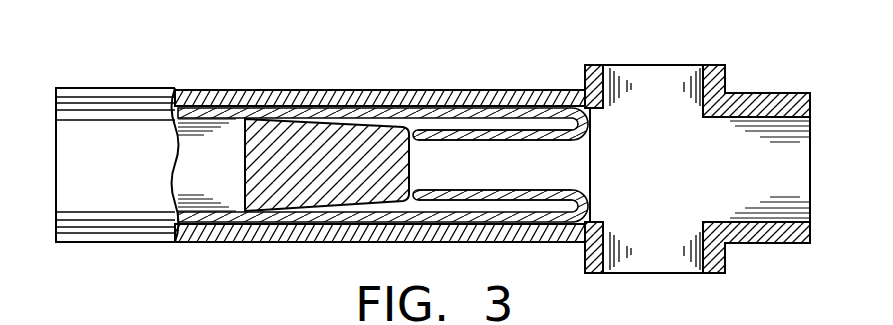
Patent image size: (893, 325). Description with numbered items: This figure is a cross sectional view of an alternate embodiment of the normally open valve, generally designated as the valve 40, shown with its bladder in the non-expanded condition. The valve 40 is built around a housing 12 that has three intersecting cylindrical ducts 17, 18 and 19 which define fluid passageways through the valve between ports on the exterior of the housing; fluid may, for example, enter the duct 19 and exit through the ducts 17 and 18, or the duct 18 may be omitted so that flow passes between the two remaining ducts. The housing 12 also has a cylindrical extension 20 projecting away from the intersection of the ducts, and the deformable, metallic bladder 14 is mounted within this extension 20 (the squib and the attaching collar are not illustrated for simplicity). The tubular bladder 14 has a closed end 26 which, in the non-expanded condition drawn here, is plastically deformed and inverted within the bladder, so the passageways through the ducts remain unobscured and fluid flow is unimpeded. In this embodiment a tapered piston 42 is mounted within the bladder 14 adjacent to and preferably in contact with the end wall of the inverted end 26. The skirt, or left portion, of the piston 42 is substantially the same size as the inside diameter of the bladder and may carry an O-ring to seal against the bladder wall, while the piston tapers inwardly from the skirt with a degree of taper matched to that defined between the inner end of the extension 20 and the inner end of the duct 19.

The housing 12 is at (483, 90).
The deformable metallic bladder 14 is at (217, 112).
The cylindrical duct 17 is at (727, 76).
The cylindrical duct 18 is at (727, 257).
The cylindrical duct 19 is at (764, 94).
The cylindrical extension 20 is at (386, 90).
The closed end 26 is at (435, 193).
The valve 40 is at (510, 53).
The tapered piston 42 is at (294, 143).